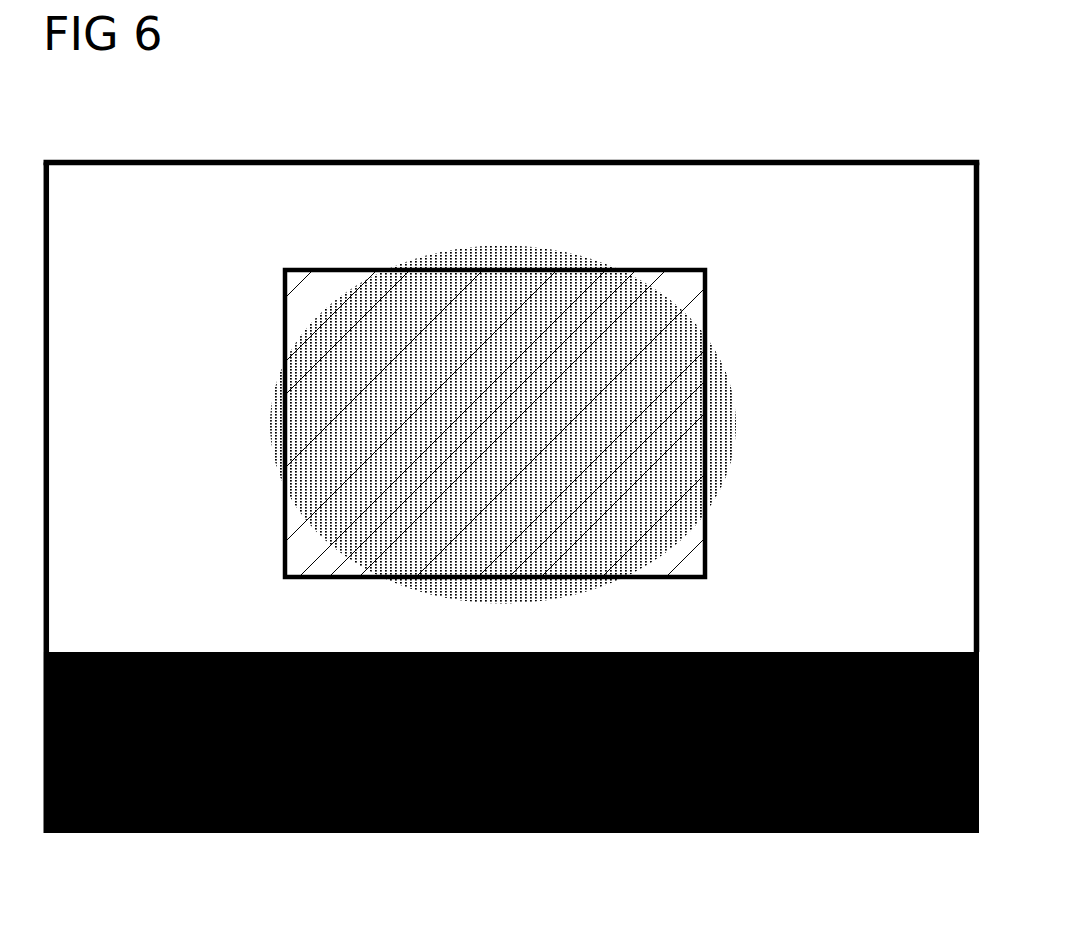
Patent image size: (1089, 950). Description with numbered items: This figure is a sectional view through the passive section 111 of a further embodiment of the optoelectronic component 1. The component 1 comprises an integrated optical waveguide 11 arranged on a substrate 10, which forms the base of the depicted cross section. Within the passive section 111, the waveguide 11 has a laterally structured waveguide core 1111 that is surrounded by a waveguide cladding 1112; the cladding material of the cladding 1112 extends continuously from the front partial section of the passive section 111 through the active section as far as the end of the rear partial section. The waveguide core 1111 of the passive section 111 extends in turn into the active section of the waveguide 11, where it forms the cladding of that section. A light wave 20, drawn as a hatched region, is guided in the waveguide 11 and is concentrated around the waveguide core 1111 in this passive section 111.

The optoelectronic component 1 is at (543, 478).
The substrate 10 is at (652, 832).
The optical waveguide 11 is at (543, 340).
The passive section 111 is at (477, 123).
The waveguide core 1111 is at (692, 555).
The waveguide cladding 1112 is at (950, 452).
The light wave 20 is at (718, 437).